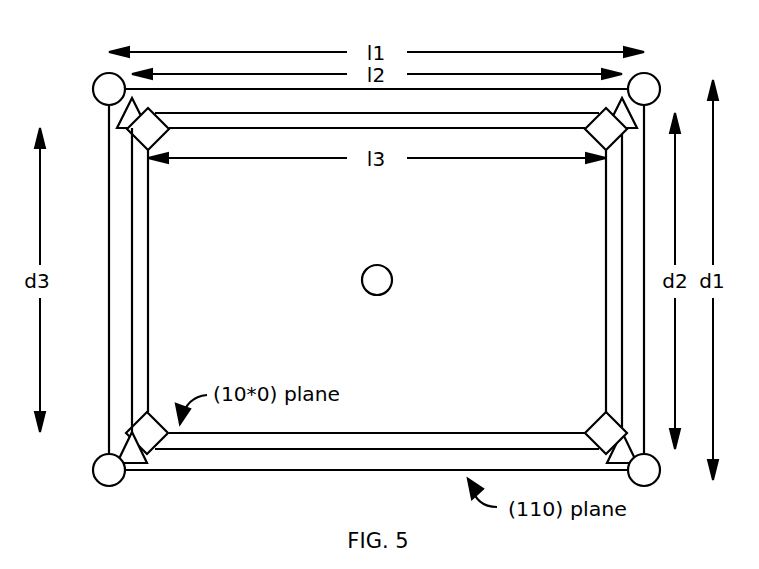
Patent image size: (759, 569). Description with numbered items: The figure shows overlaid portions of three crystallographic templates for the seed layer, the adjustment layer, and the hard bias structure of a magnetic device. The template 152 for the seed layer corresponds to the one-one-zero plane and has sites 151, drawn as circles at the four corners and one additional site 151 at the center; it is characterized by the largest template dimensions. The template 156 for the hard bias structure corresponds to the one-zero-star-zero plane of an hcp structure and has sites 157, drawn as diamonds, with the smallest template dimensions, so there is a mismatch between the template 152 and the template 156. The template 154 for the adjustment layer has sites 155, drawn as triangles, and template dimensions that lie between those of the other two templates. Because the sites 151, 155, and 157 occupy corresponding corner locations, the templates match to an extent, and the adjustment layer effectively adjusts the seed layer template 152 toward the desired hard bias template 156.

The sites 151 is at (363, 281).
The template 152 is at (108, 173).
The template 154 is at (133, 282).
The template 156 is at (148, 263).
The sites 155 is at (147, 463).
The sites 157 is at (598, 420).